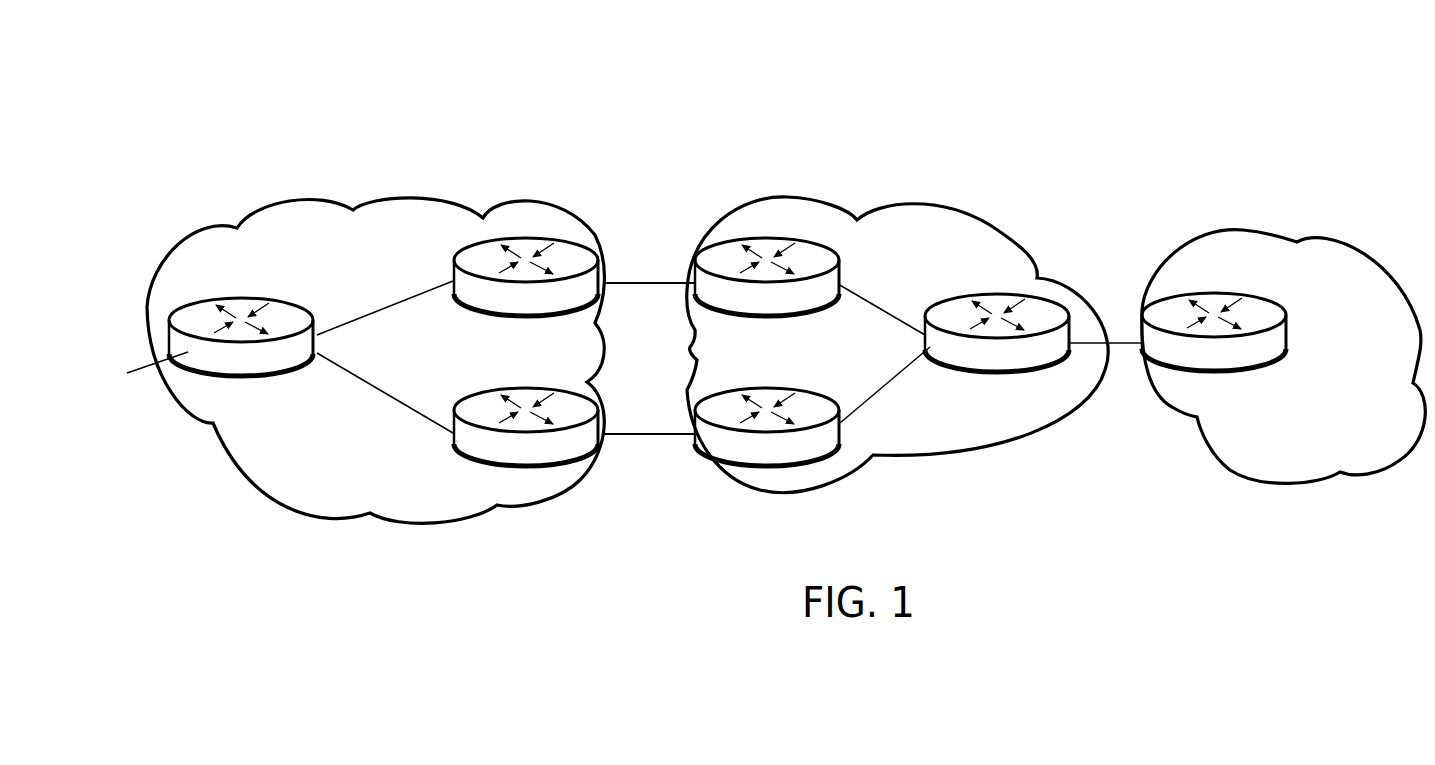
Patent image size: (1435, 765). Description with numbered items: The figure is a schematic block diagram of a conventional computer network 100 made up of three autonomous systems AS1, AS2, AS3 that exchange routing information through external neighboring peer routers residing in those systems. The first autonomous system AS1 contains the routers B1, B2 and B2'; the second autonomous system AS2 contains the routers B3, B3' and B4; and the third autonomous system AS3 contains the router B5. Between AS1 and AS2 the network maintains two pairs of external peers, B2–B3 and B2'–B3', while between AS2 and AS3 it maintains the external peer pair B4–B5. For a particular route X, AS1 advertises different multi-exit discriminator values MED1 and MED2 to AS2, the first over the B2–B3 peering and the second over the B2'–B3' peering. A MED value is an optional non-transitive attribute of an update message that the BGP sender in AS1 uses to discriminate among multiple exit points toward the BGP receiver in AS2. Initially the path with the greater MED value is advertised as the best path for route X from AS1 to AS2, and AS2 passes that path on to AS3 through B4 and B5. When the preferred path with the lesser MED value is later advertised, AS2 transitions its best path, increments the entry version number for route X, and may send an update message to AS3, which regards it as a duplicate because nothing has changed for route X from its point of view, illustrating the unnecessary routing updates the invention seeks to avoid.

The computer network 100 is at (219, 107).
The route X is at (140, 365).
The border router B1 is at (240, 378).
The external peer router B2 is at (522, 295).
The external peer router B2' is at (521, 444).
The external peer router B3 is at (793, 277).
The external peer router B3' is at (769, 410).
The external peer router B4 is at (997, 292).
The external peer router B5 is at (1207, 290).
The multi-exit discriminator value MED1 is at (649, 269).
The multi-exit discriminator value MED2 is at (649, 451).
The autonomous system AS1 is at (375, 360).
The autonomous system AS2 is at (897, 345).
The autonomous system AS3 is at (1284, 357).